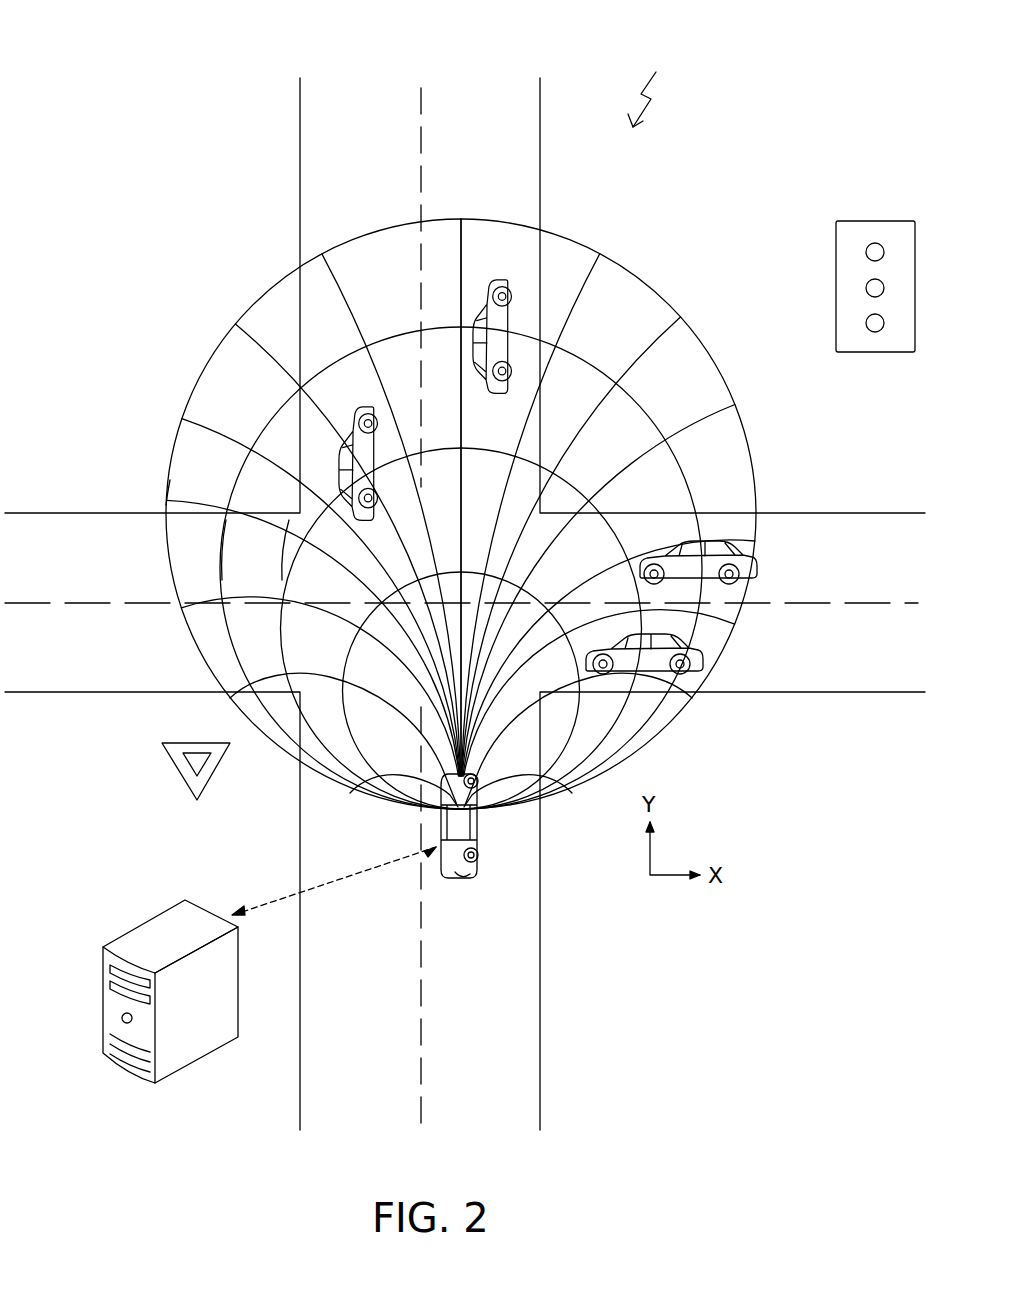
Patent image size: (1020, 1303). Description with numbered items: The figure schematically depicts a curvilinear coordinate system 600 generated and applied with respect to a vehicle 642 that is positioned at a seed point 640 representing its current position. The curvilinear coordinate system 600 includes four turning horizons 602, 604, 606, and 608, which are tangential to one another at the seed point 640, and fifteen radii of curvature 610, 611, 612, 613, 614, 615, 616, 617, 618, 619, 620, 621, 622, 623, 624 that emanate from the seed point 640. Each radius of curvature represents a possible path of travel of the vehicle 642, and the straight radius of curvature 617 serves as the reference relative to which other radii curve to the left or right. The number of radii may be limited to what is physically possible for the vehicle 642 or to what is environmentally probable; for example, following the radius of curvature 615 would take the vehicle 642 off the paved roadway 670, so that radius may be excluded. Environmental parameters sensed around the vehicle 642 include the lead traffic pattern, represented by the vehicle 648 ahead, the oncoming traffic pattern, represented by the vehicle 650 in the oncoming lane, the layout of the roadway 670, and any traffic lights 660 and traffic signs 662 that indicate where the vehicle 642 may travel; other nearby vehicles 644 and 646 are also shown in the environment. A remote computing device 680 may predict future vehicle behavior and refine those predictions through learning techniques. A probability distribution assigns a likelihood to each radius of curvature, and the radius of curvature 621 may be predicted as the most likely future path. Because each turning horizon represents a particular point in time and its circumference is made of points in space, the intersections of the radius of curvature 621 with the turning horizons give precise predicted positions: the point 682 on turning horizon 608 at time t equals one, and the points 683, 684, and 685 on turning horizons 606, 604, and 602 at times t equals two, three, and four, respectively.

The curvilinear coordinate system 600 is at (660, 84).
The turning horizon 602 is at (622, 266).
The turning horizon 604 is at (598, 368).
The turning horizon 606 is at (548, 470).
The turning horizon 608 is at (462, 535).
The radius of curvature 610 is at (556, 790).
The radius of curvature 611 is at (677, 710).
The radius of curvature 612 is at (738, 622).
The radius of curvature 613 is at (757, 541).
The radius of curvature 614 is at (733, 412).
The radius of curvature 615 is at (682, 322).
The radius of curvature 616 is at (600, 255).
The straight radius of curvature 617 is at (458, 228).
The radius of curvature 618 is at (328, 258).
The radius of curvature 619 is at (237, 325).
The radius of curvature 620 is at (183, 418).
The radius of curvature 621 is at (166, 500).
The radius of curvature 622 is at (181, 608).
The radius of curvature 623 is at (230, 700).
The radius of curvature 624 is at (365, 790).
The seed point 640 is at (477, 832).
The vehicle 642 is at (470, 880).
The other vehicle 644 is at (703, 665).
The other vehicle 646 is at (757, 566).
The vehicle 648 is at (492, 278).
The vehicle 650 is at (345, 412).
The traffic light 660 is at (860, 220).
The traffic sign 662 is at (162, 775).
The paved roadway 670 is at (298, 158).
The remote computing device 680 is at (150, 922).
The point 682 is at (378, 606).
The point 683 is at (296, 552).
The point 684 is at (220, 548).
The point 685 is at (170, 520).